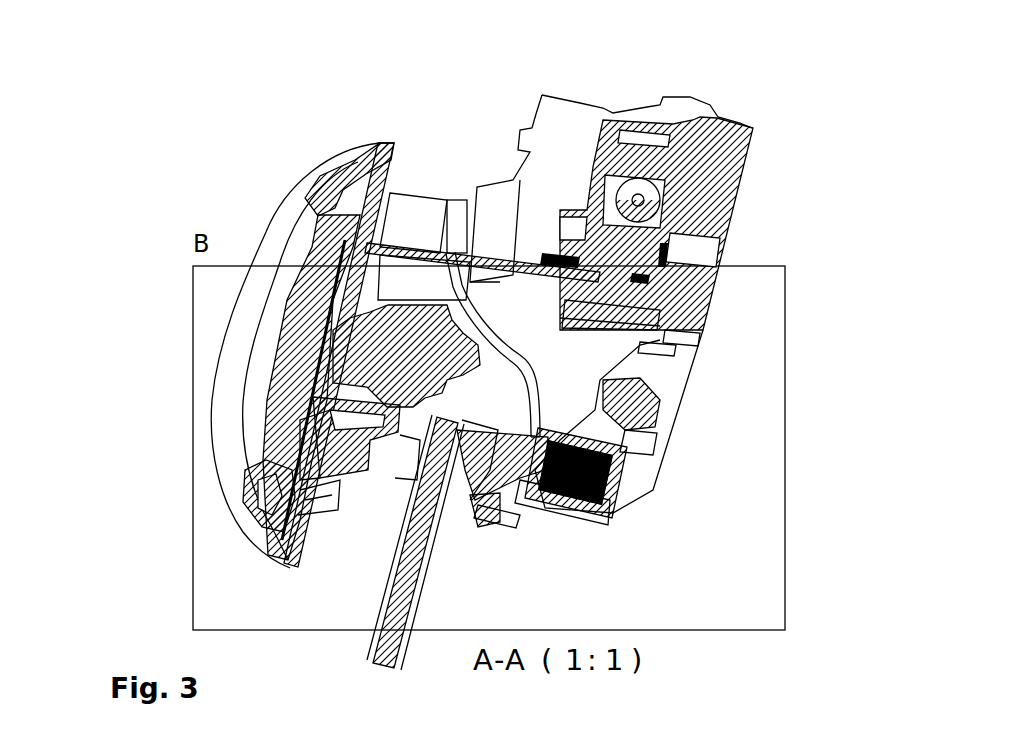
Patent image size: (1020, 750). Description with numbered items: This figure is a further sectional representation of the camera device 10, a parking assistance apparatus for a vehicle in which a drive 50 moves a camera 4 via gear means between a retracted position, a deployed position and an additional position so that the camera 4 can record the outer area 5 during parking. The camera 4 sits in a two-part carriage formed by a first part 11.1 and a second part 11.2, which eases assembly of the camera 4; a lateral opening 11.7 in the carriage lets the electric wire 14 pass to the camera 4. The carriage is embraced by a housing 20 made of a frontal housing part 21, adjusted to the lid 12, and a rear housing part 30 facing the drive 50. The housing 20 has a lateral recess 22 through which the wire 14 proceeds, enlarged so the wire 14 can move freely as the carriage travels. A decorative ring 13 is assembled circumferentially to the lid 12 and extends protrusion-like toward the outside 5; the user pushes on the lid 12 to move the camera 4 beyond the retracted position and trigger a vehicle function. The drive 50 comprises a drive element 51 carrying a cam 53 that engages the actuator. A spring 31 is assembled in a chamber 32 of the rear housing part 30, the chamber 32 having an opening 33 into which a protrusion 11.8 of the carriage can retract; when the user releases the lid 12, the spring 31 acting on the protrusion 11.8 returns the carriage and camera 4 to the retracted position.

The camera 4 is at (417, 327).
The outer area 5 is at (131, 355).
The camera device 10 is at (490, 100).
The first part of the carriage 11.1 is at (372, 477).
The second part of the carriage 11.2 is at (620, 370).
The lateral opening of the carriage 11.7 is at (480, 527).
The protrusion 11.8 is at (500, 520).
The lid 12 is at (287, 345).
The decorative ring 13 is at (273, 233).
The electric wire 14 is at (405, 590).
The housing 20 is at (318, 495).
The frontal housing part 21 is at (318, 497).
The lateral recess 22 is at (388, 493).
The rear housing part 30 is at (523, 520).
The spring 31 is at (620, 503).
The chamber 32 is at (620, 478).
The opening of the chamber 33 is at (640, 425).
The drive 50 is at (736, 240).
The drive element 51 is at (690, 342).
The cam 53 is at (675, 347).